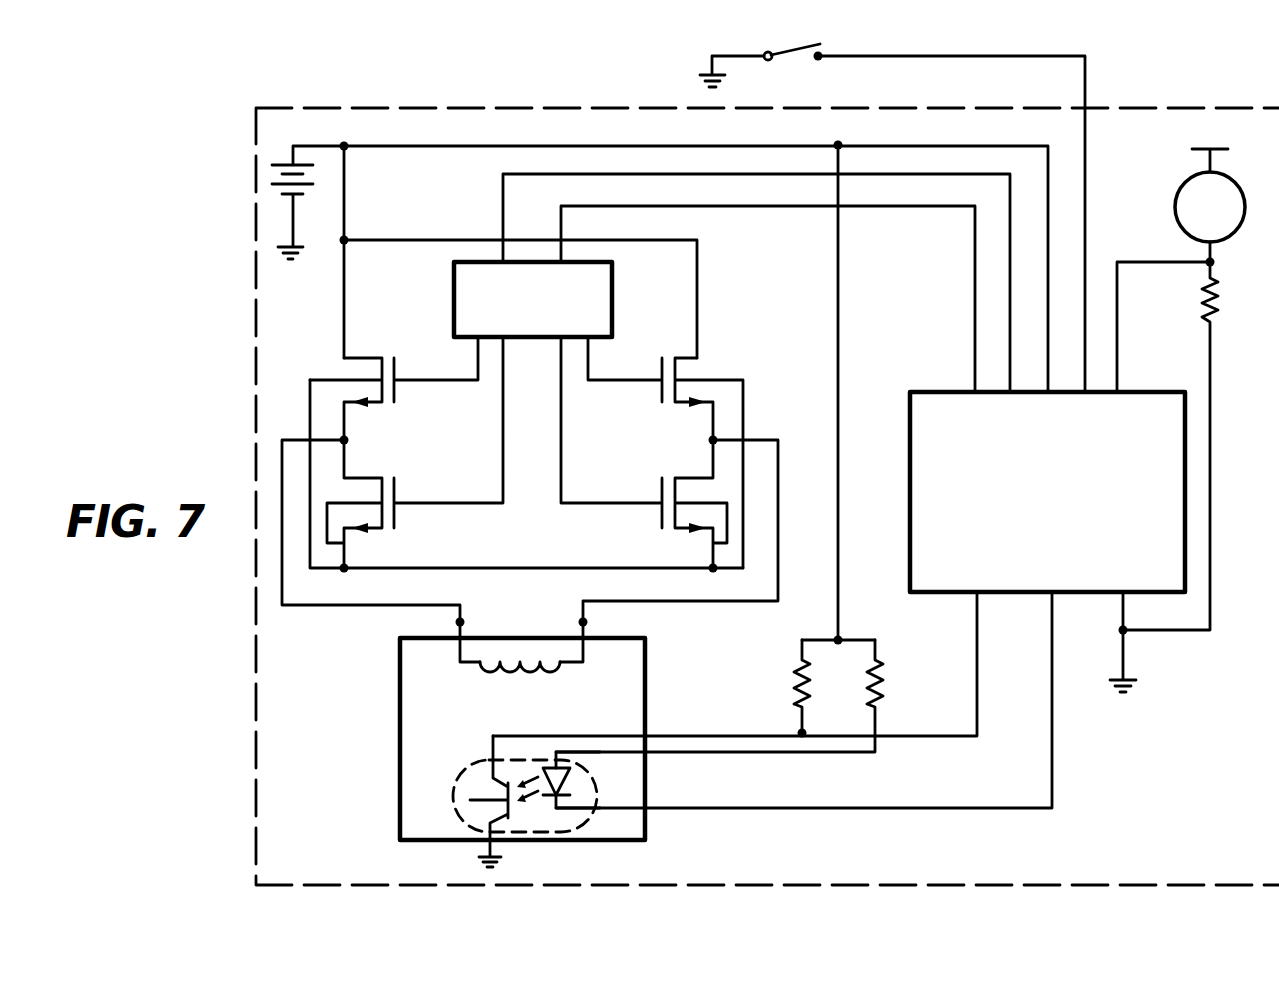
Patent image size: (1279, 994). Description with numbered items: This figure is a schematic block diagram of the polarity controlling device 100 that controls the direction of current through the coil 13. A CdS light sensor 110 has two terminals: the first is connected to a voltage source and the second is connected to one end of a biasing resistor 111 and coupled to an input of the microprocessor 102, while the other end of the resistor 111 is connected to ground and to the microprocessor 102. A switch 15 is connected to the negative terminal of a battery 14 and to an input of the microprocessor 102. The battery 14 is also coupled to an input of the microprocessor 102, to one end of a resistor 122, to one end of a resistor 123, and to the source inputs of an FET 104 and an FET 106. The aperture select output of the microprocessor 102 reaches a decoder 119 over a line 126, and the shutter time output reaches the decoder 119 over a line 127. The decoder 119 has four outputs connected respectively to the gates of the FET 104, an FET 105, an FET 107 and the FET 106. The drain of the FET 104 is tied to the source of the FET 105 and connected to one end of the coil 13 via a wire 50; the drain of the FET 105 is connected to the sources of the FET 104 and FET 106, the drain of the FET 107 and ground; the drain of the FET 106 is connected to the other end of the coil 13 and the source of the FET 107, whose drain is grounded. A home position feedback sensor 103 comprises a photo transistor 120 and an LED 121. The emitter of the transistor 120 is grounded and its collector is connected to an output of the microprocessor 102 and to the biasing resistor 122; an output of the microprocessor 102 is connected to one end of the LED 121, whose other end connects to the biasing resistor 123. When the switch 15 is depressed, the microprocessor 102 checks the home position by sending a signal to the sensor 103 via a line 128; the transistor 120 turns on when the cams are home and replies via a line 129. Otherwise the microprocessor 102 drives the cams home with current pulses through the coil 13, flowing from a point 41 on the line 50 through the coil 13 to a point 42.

The polarity controlling device 100 is at (268, 711).
The switch 15 is at (797, 50).
The battery 14 is at (310, 184).
The line 126 is at (503, 200).
The line 127 is at (785, 205).
The decoder 119 is at (456, 289).
The FET 104 is at (394, 367).
The FET 105 is at (384, 479).
The FET 106 is at (678, 372).
The FET 107 is at (676, 479).
The wire 50 is at (290, 542).
The point 41 is at (460, 623).
The point 42 is at (583, 623).
The coil 13 is at (483, 673).
The home position feedback sensor 103 is at (468, 760).
The photo transistor 120 is at (485, 797).
The LED 121 is at (568, 800).
The biasing resistor 122 is at (797, 677).
The biasing resistor 123 is at (878, 668).
The line 128 is at (1052, 688).
The line 129 is at (977, 680).
The microprocessor 102 is at (937, 406).
The CdS light sensor 110 is at (1178, 205).
The biasing resistor 111 is at (1200, 297).